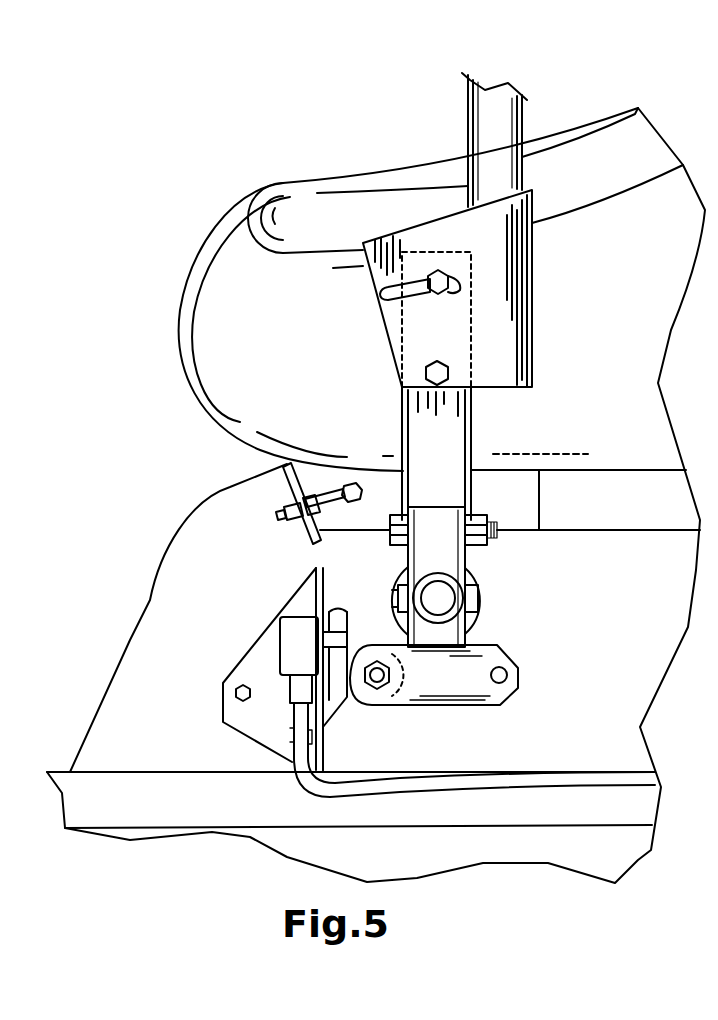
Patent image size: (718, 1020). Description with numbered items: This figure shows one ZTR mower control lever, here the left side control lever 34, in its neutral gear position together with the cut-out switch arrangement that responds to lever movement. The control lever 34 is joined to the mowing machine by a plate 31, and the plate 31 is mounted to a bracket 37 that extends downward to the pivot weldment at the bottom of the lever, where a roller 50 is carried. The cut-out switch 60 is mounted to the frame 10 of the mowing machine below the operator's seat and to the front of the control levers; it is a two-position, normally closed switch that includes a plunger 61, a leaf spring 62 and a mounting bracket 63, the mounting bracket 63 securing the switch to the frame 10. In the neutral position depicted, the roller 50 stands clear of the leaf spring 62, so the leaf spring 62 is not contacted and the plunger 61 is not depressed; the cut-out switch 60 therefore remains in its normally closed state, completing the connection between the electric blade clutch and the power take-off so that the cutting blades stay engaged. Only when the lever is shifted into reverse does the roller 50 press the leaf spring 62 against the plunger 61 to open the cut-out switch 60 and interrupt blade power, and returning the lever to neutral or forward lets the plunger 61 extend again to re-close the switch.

The frame 10 is at (634, 635).
The plate 31 is at (503, 320).
The left side control lever 34 is at (497, 128).
The bracket 37 is at (445, 447).
The roller 50 is at (350, 703).
The cut-out switch 60 is at (298, 627).
The plunger 61 is at (334, 632).
The leaf spring 62 is at (353, 612).
The mounting bracket 63 is at (262, 660).